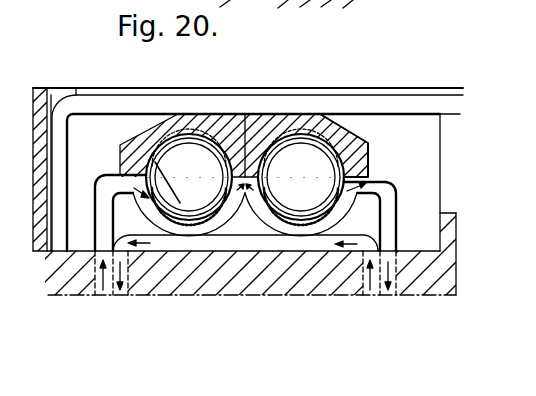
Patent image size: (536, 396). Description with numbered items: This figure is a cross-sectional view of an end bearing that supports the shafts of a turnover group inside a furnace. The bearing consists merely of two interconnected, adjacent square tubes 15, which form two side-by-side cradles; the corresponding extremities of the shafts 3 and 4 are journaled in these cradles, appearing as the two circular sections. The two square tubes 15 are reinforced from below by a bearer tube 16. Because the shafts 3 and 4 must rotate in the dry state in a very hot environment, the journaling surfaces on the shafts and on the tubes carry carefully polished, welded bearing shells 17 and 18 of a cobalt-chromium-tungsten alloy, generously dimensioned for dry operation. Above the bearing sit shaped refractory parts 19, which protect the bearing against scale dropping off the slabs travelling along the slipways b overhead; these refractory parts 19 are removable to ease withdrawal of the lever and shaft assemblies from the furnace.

The shaft 3 is at (311, 157).
The shaft 4 is at (193, 163).
The square tubes 15 is at (374, 185).
The bearer tube 16 is at (220, 245).
The bearing shell 17 is at (178, 210).
The bearing shell 18 is at (293, 212).
The refractory parts 19 is at (213, 128).
The slipways b is at (380, 102).